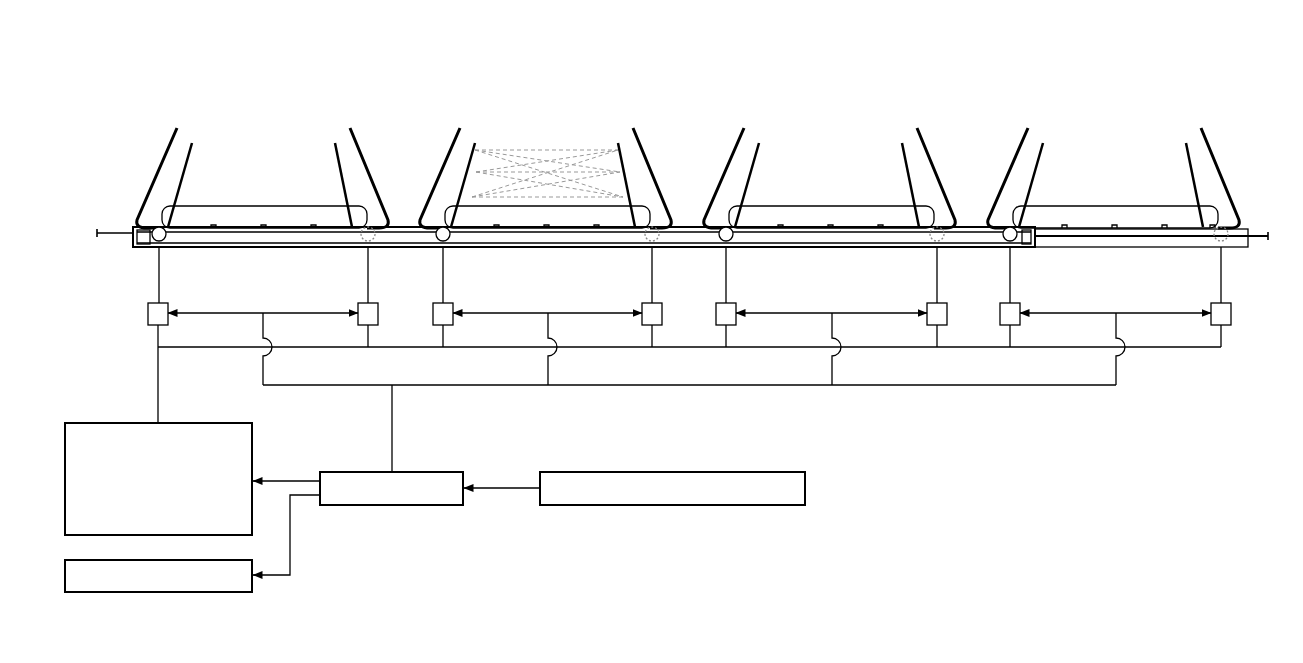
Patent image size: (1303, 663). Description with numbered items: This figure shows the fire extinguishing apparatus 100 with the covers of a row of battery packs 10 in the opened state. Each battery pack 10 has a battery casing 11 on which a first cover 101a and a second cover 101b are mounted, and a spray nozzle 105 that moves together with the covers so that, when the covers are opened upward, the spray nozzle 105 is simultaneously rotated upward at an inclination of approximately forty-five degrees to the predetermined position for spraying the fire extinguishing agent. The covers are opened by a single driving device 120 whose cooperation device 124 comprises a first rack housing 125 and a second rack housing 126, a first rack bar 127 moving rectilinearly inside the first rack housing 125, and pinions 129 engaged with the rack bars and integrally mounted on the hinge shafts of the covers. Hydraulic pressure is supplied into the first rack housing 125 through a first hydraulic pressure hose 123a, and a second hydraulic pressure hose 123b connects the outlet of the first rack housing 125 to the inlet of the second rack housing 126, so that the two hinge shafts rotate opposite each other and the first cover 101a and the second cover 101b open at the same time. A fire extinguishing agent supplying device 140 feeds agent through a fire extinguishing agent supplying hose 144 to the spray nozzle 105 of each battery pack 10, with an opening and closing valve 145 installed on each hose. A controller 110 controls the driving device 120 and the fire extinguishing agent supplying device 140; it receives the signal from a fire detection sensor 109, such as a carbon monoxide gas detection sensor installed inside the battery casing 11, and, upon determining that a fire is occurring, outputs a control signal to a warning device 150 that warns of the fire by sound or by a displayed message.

The fire extinguishing apparatus 100 is at (822, 512).
The battery pack 10 is at (258, 193).
The battery casing 11 is at (202, 212).
The first cover 101a is at (166, 148).
The second cover 101b is at (358, 138).
The spray nozzle 105 is at (471, 152).
The fire detection sensor 109 is at (600, 506).
The controller 110 is at (393, 506).
The driving device 120 is at (673, 211).
The first hydraulic pressure hose 123a is at (115, 231).
The second hydraulic pressure hose 123b is at (1255, 242).
The cooperation device 124 is at (683, 224).
The first rack housing 125 is at (400, 224).
The second rack housing 126 is at (1240, 231).
The first rack bar 127 is at (195, 247).
The pinion 129 is at (158, 225).
The fire extinguishing agent supplying device 140 is at (252, 445).
The fire extinguishing agent supplying hose 144 is at (403, 346).
The opening and closing valve 145 is at (444, 302).
The warning device 150 is at (252, 588).